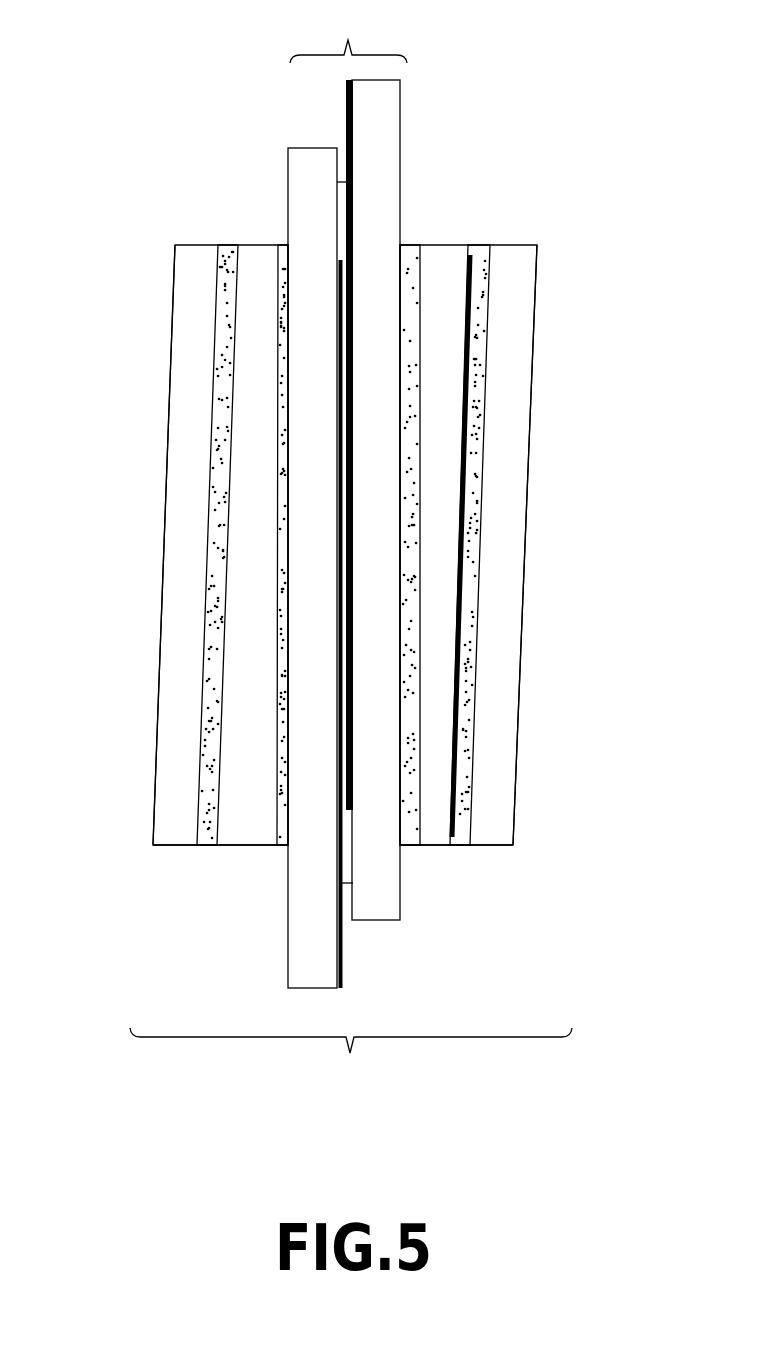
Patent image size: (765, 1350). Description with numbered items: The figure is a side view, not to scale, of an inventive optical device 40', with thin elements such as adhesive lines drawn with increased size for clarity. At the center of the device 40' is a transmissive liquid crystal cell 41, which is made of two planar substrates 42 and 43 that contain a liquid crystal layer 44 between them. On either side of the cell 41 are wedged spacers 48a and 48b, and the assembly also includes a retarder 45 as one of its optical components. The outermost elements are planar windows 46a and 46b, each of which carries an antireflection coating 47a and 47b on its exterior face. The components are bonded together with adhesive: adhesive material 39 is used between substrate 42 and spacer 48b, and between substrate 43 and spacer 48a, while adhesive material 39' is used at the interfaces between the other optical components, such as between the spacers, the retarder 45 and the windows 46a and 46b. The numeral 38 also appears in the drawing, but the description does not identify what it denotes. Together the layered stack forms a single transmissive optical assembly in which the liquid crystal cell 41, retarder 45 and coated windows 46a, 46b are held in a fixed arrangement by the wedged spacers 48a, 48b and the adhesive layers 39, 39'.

The catalyst layer 38 is at (408, 838).
The adhesive material 39 is at (236, 517).
The adhesive material 39' is at (289, 515).
The inventive device 40' is at (351, 1065).
The transmissive liquid crystal cell 41 is at (348, 32).
The planar substrate 42 is at (288, 168).
The planar substrate 43 is at (400, 104).
The liquid crystal layer 44 is at (342, 212).
The retarder 45 is at (455, 800).
The planar window 46a is at (517, 245).
The planar window 46b is at (172, 845).
The antireflection coating 47a is at (517, 737).
The antireflection coating 47b is at (157, 685).
The wedged spacer 48a is at (437, 845).
The wedged spacer 48b is at (237, 845).